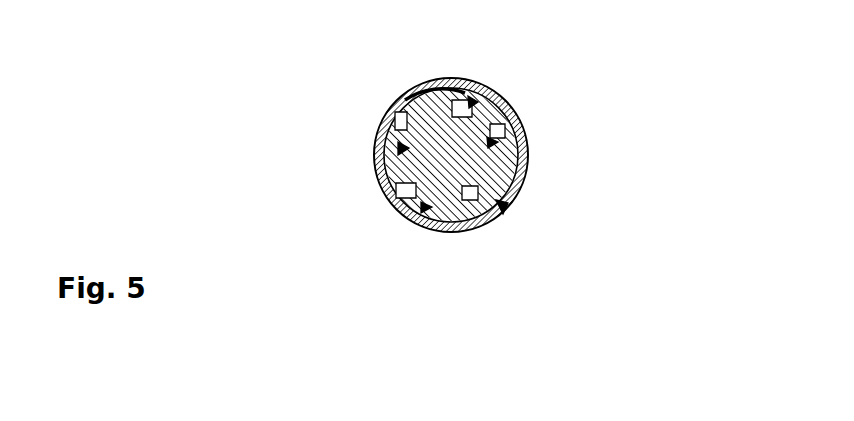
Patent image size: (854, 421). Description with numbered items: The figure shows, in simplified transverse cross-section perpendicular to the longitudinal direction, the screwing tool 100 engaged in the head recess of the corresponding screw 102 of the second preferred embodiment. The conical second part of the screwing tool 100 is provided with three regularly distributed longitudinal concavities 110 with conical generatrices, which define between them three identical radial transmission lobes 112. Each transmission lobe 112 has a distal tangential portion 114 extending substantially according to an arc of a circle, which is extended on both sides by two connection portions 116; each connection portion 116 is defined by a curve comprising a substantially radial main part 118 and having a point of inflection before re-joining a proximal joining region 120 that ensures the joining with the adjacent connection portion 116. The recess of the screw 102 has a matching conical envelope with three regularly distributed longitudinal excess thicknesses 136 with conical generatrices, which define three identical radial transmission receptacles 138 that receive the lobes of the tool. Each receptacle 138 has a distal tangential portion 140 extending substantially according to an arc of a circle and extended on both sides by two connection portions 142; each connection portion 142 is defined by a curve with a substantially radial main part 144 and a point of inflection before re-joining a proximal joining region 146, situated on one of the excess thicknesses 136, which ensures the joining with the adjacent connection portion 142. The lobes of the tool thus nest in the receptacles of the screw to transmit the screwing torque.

The screwing tool 100 is at (528, 126).
The screw 102 is at (505, 210).
The longitudinal concavities 110 is at (392, 132).
The radial transmission lobes 112 is at (410, 88).
The distal tangential portion 114 is at (428, 92).
The connection portions 116 is at (470, 92).
The substantially radial main part 118 is at (447, 86).
The proximal joining region 120 is at (495, 105).
The longitudinal excess thicknesses 136 is at (477, 215).
The radial transmission receptacles 138 is at (430, 215).
The distal tangential portion 140 is at (412, 208).
The connection portions 142 is at (467, 222).
The substantially radial main part 144 is at (505, 202).
The proximal joining region 146 is at (485, 213).